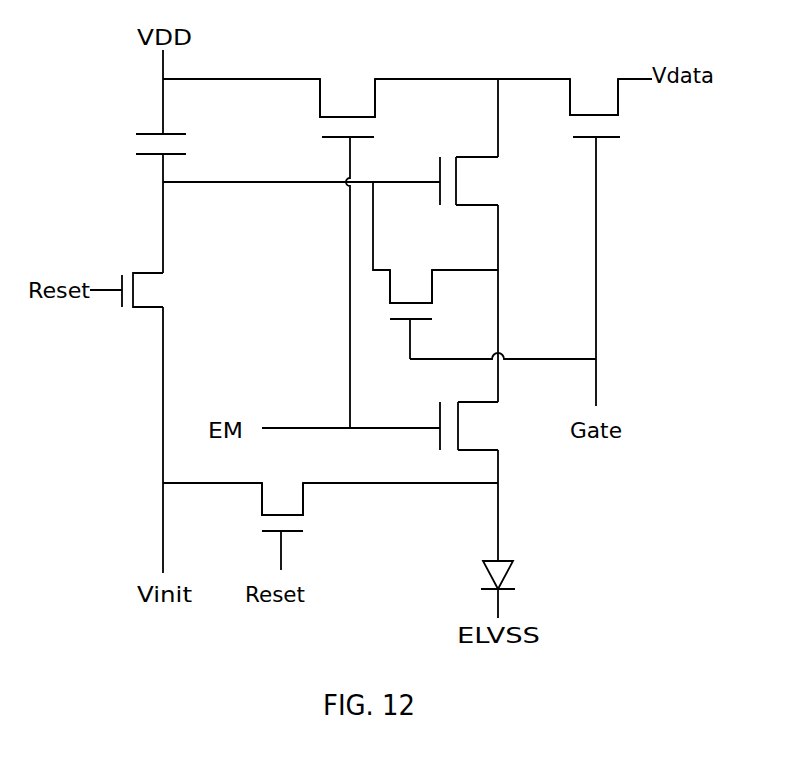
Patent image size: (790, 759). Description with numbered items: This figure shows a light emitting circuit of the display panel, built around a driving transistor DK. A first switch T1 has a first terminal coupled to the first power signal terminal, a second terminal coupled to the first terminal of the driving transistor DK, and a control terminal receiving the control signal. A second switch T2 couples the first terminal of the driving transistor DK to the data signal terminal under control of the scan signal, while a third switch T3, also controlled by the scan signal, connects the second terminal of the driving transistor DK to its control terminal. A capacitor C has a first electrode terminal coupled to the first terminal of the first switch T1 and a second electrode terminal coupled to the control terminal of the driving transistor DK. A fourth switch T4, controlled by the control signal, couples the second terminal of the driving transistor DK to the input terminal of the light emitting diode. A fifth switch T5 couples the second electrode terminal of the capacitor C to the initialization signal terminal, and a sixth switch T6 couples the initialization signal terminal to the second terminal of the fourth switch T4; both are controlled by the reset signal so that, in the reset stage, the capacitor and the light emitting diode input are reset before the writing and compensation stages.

The capacitor C is at (150, 145).
The first switch T1 is at (347, 233).
The second switch T2 is at (595, 229).
The third switch T3 is at (428, 314).
The fourth switch T4 is at (488, 426).
The fifth switch T5 is at (146, 290).
The sixth switch T6 is at (304, 526).
The driving transistor DK is at (464, 165).